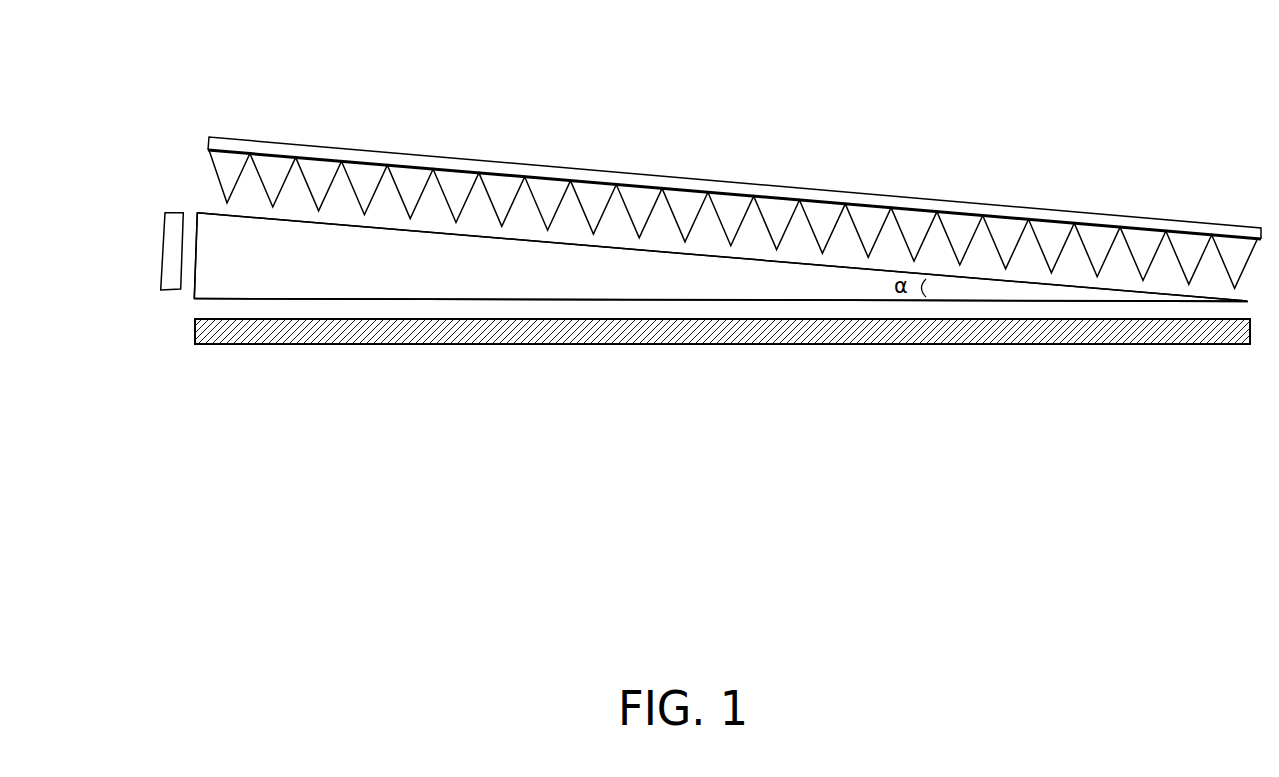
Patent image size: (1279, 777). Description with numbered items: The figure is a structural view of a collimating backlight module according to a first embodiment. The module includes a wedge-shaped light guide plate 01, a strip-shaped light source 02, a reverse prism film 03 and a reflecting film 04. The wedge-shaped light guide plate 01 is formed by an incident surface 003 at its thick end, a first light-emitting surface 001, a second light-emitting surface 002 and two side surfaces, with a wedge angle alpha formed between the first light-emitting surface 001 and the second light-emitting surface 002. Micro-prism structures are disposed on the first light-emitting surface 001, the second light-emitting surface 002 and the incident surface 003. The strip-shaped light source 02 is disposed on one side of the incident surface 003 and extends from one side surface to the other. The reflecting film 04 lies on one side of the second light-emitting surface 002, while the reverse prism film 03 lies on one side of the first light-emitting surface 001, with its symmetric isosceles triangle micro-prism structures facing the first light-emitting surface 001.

The wedge-shaped light guide plate 01 is at (249, 264).
The first light-emitting surface 001 is at (480, 233).
The second light-emitting surface 002 is at (427, 298).
The incident surface 003 is at (195, 258).
The strip-shaped light source 02 is at (163, 233).
The reverse prism film 03 is at (410, 178).
The reflecting film 04 is at (647, 345).